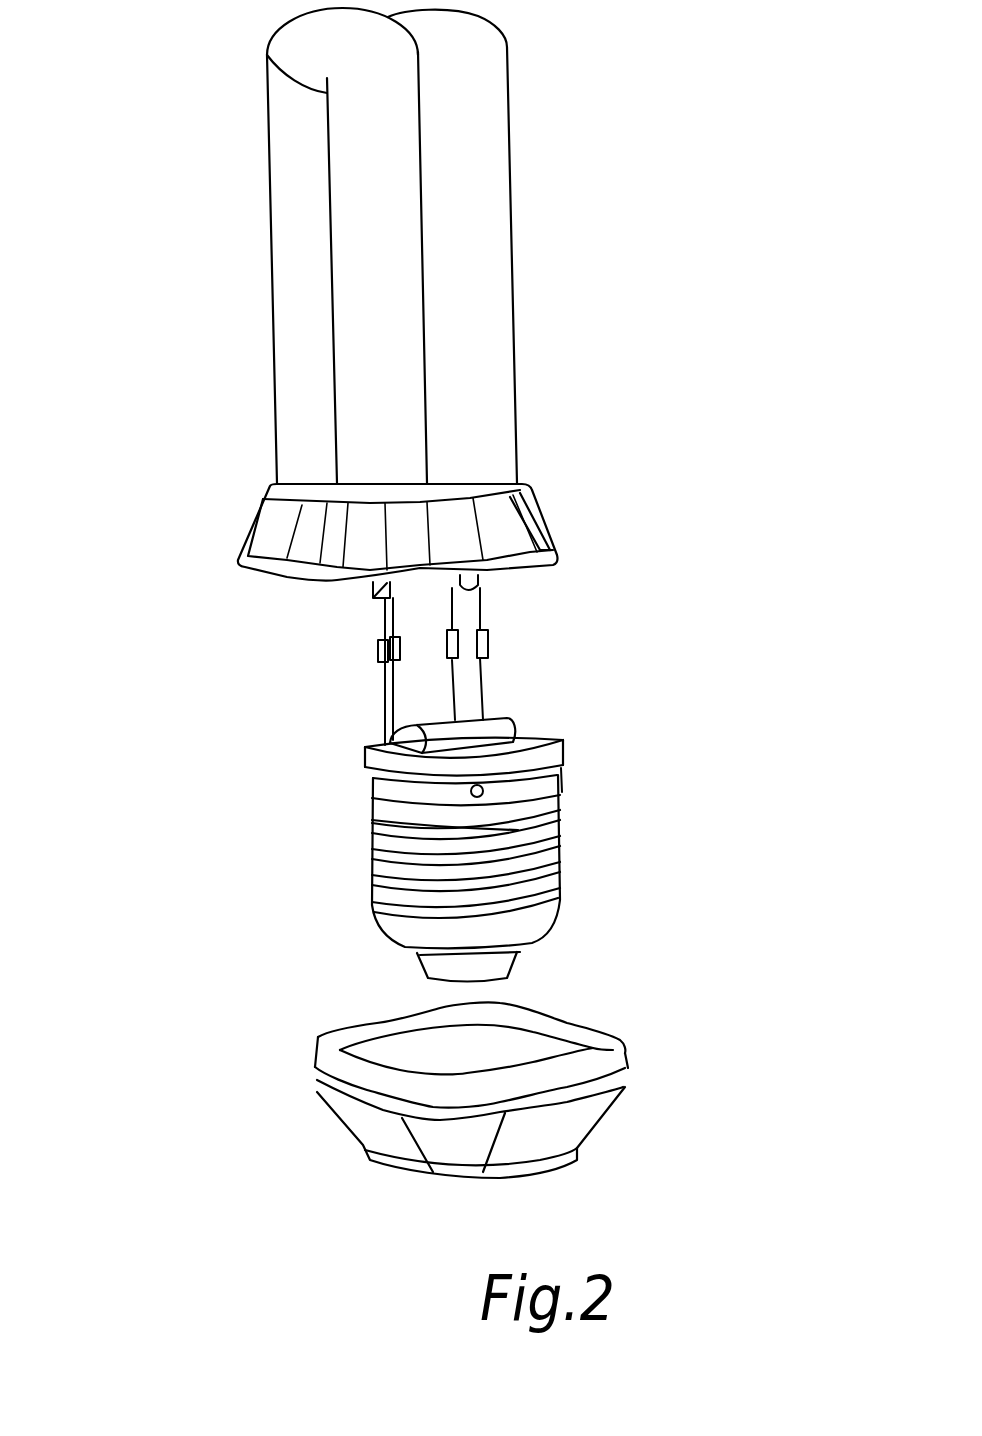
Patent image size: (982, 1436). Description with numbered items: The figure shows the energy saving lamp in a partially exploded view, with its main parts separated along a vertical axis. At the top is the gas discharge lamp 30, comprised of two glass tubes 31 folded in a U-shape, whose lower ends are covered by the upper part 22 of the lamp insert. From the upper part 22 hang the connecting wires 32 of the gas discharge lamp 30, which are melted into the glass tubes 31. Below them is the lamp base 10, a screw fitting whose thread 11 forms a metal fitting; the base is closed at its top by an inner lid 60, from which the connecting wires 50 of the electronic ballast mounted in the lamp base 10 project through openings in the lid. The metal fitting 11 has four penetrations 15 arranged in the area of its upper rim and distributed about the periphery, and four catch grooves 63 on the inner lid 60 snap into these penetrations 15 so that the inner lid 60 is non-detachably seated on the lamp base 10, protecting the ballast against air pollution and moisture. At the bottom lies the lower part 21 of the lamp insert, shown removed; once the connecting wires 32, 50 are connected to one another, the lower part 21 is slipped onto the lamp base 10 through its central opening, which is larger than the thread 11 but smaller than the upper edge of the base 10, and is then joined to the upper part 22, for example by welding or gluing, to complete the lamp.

The lamp base 10 is at (456, 899).
The thread 11 is at (507, 878).
The penetrations 15 is at (575, 777).
The lower part 21 is at (550, 1123).
The upper part 22 is at (497, 518).
The gas discharge lamp 30 is at (401, 376).
The glass tubes 31 is at (382, 113).
The connecting wires 32 is at (400, 630).
The connecting wires 50 is at (395, 700).
The inner lid 60 is at (568, 729).
The catch grooves 63 is at (470, 793).